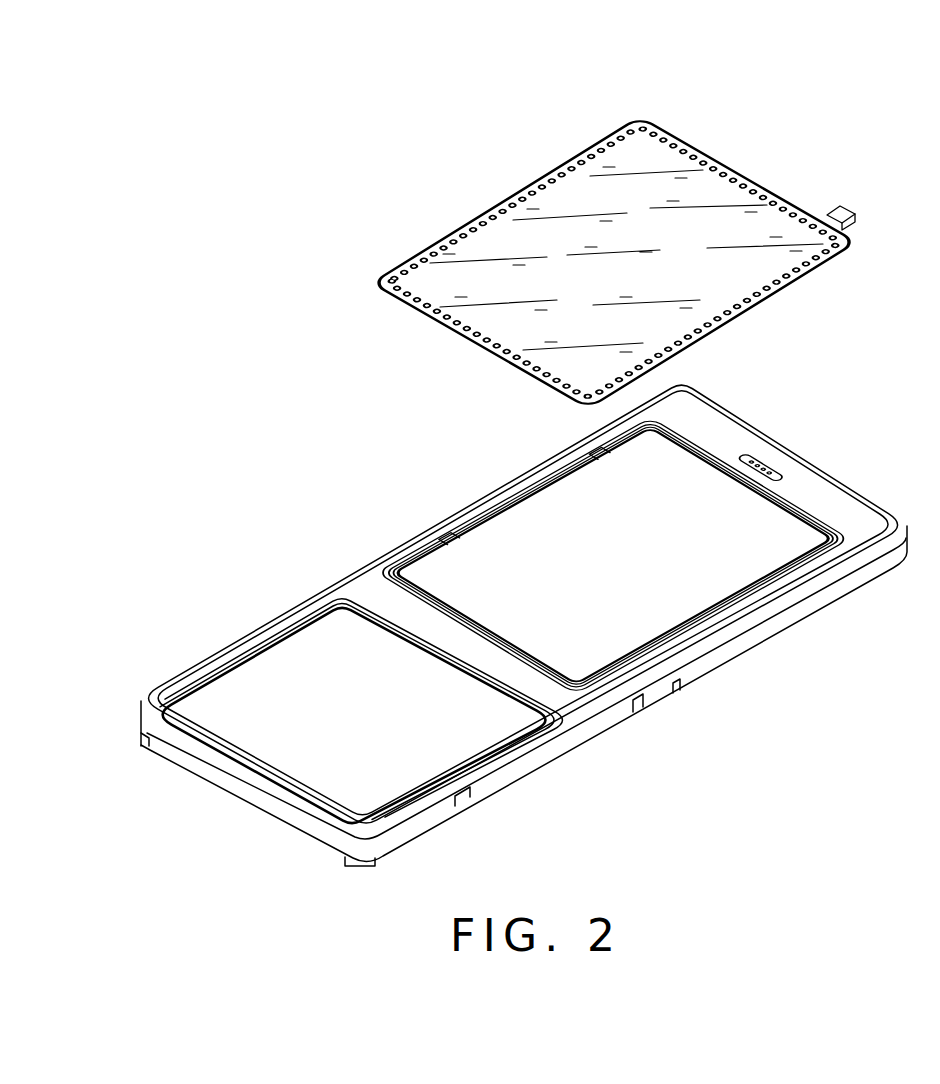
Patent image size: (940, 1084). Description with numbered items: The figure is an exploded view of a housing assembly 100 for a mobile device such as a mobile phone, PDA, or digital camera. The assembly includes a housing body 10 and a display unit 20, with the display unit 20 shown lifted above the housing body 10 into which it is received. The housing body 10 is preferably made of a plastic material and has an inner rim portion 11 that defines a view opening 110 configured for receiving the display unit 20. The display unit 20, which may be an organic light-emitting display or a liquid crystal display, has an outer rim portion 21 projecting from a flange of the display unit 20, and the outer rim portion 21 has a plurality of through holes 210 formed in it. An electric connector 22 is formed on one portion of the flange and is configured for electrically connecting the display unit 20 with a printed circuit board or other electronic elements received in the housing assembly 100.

The housing assembly 100 is at (532, 459).
The housing body 10 is at (532, 625).
The inner rim portion 11 is at (790, 578).
The view opening 110 is at (662, 578).
The display unit 20 is at (645, 250).
The outer rim portion 21 is at (700, 146).
The through holes 210 is at (727, 160).
The positioning tab 22 is at (848, 210).